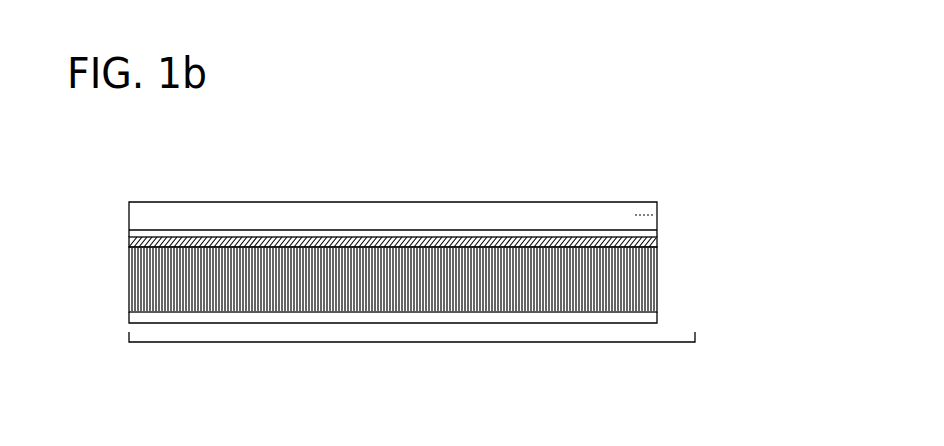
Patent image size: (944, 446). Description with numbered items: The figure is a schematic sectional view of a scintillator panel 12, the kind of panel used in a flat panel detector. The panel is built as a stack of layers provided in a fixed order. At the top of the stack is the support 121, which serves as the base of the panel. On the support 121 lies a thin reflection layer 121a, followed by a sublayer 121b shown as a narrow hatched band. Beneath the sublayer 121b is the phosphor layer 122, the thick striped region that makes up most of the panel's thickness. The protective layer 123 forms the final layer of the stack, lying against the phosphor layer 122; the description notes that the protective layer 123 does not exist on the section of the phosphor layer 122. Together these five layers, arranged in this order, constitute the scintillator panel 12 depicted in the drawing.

The scintillator panel 12 is at (386, 144).
The support 121 is at (660, 204).
The reflection layer 121a is at (660, 228).
The sublayer 121b is at (660, 243).
The phosphor layer 122 is at (660, 285).
The protective layer 123 is at (660, 316).